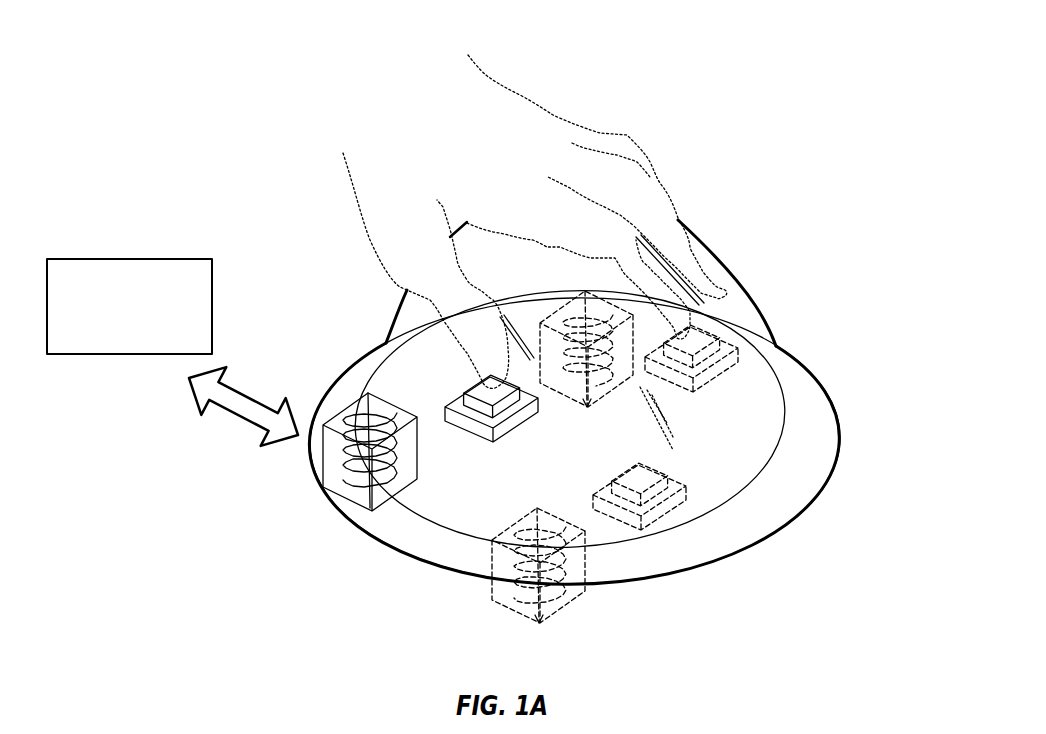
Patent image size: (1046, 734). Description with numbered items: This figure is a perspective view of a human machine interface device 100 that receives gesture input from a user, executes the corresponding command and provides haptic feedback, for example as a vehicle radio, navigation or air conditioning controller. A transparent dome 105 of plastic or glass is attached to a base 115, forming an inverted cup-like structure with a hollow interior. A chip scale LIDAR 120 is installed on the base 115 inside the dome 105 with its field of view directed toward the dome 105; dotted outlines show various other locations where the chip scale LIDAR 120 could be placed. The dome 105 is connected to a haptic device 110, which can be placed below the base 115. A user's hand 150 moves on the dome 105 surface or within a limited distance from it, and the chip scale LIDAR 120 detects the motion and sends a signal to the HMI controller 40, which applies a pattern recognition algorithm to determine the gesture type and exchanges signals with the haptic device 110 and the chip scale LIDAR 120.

The human machine interface device 100 is at (805, 148).
The dome 105 is at (748, 282).
The haptic device 110 is at (352, 495).
The base 115 is at (840, 435).
The chip scale LIDAR 120 is at (513, 428).
The hand 150 is at (668, 190).
The HMI controller 40 is at (172, 352).